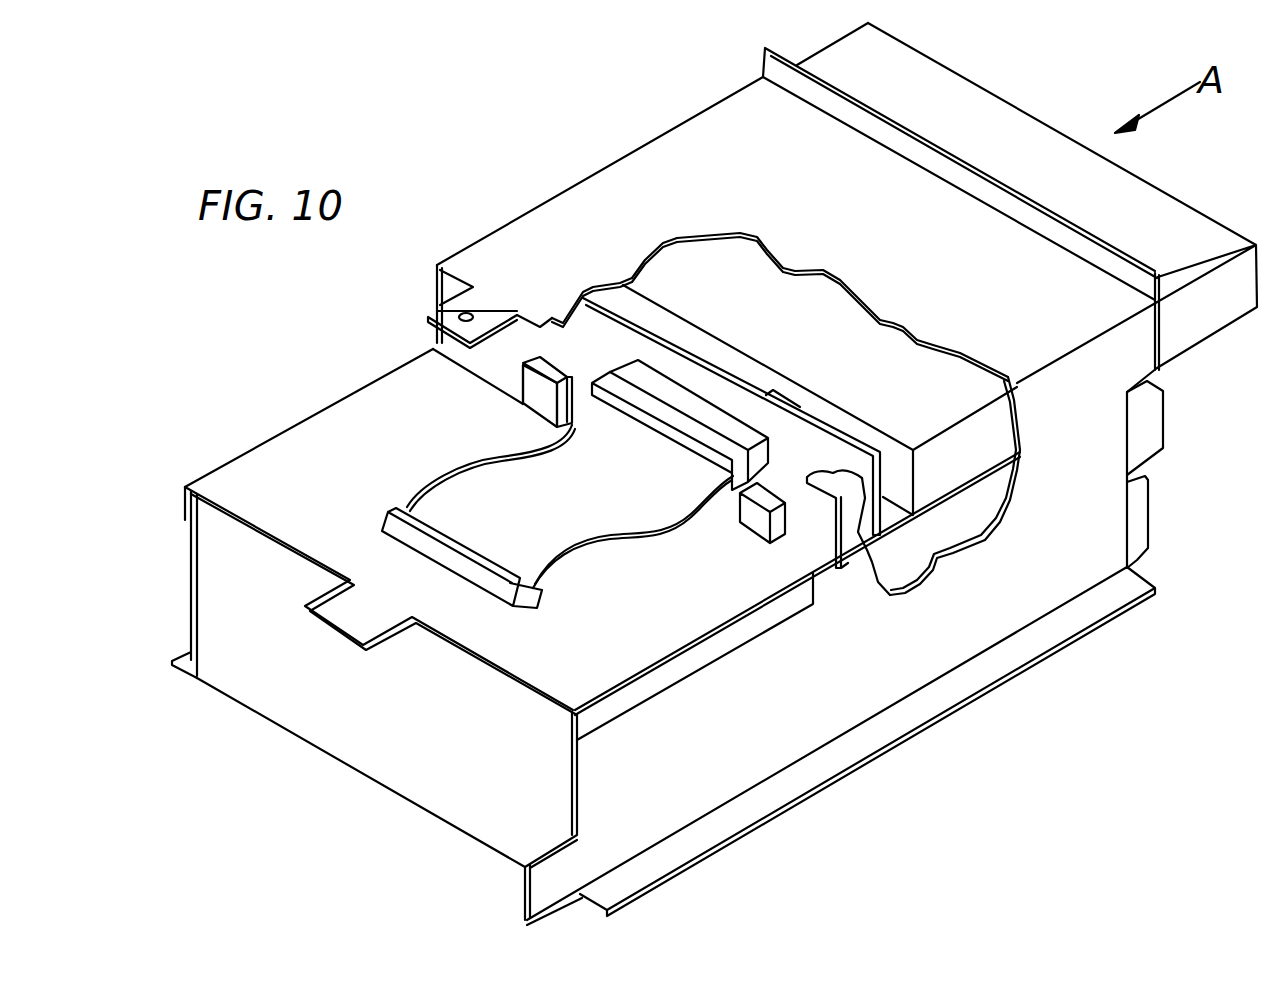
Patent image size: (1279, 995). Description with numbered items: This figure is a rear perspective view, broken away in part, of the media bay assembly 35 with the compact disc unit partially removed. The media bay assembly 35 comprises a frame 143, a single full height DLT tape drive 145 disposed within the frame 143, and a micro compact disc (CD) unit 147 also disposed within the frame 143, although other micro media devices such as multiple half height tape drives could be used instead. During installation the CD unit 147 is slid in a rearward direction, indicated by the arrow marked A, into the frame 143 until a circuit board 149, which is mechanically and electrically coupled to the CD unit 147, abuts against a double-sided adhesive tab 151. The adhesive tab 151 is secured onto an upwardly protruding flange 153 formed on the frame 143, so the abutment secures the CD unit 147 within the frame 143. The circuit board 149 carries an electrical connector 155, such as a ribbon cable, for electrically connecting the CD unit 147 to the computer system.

The media bay assembly 35 is at (1063, 658).
The frame 143 is at (683, 785).
The DLT tape drive 145 is at (1157, 470).
The compact disc (CD) unit 147 is at (1200, 314).
The circuit board 149 is at (872, 538).
The double-sided adhesive tab 151 is at (523, 380).
The upwardly protruding flange 153 is at (543, 397).
The electrical connector 155 is at (540, 517).